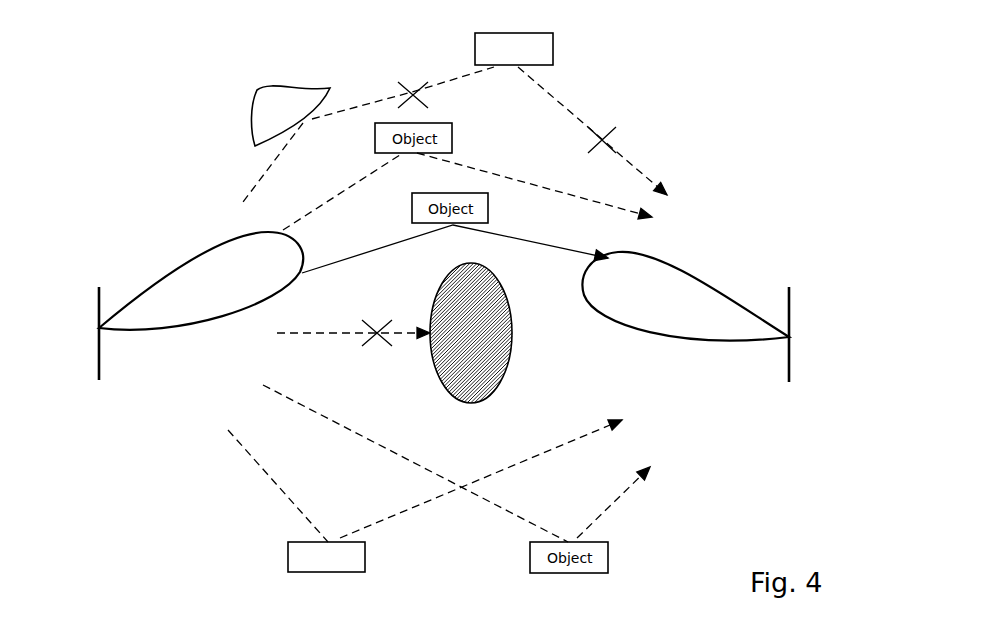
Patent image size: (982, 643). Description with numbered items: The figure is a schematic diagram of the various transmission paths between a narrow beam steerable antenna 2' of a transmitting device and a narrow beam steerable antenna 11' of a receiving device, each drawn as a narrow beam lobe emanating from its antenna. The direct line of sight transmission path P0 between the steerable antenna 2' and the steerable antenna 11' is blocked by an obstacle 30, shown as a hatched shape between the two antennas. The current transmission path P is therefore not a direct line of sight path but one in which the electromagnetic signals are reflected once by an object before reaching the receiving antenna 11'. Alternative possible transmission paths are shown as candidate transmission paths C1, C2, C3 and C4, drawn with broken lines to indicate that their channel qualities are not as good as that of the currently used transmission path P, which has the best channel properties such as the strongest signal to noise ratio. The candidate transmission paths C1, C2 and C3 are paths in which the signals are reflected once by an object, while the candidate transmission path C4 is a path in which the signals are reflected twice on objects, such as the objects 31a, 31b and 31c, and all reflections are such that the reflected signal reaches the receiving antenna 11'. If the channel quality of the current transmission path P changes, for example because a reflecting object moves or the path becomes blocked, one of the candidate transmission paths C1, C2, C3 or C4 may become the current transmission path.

The narrow beam steerable antenna of the transmitting device 2' is at (177, 306).
The narrow beam steerable antenna of the receiving device 11' is at (718, 317).
The obstacle 30 is at (513, 343).
The object 31a is at (327, 90).
The object 31b is at (553, 49).
The object 31c is at (365, 556).
The current transmission path P is at (357, 260).
The direct line of sight transmission path P0 is at (297, 335).
The candidate transmission path C1 is at (353, 432).
The candidate transmission path C2 is at (413, 505).
The candidate transmission path C3 is at (485, 173).
The candidate transmission path C4 is at (273, 157).